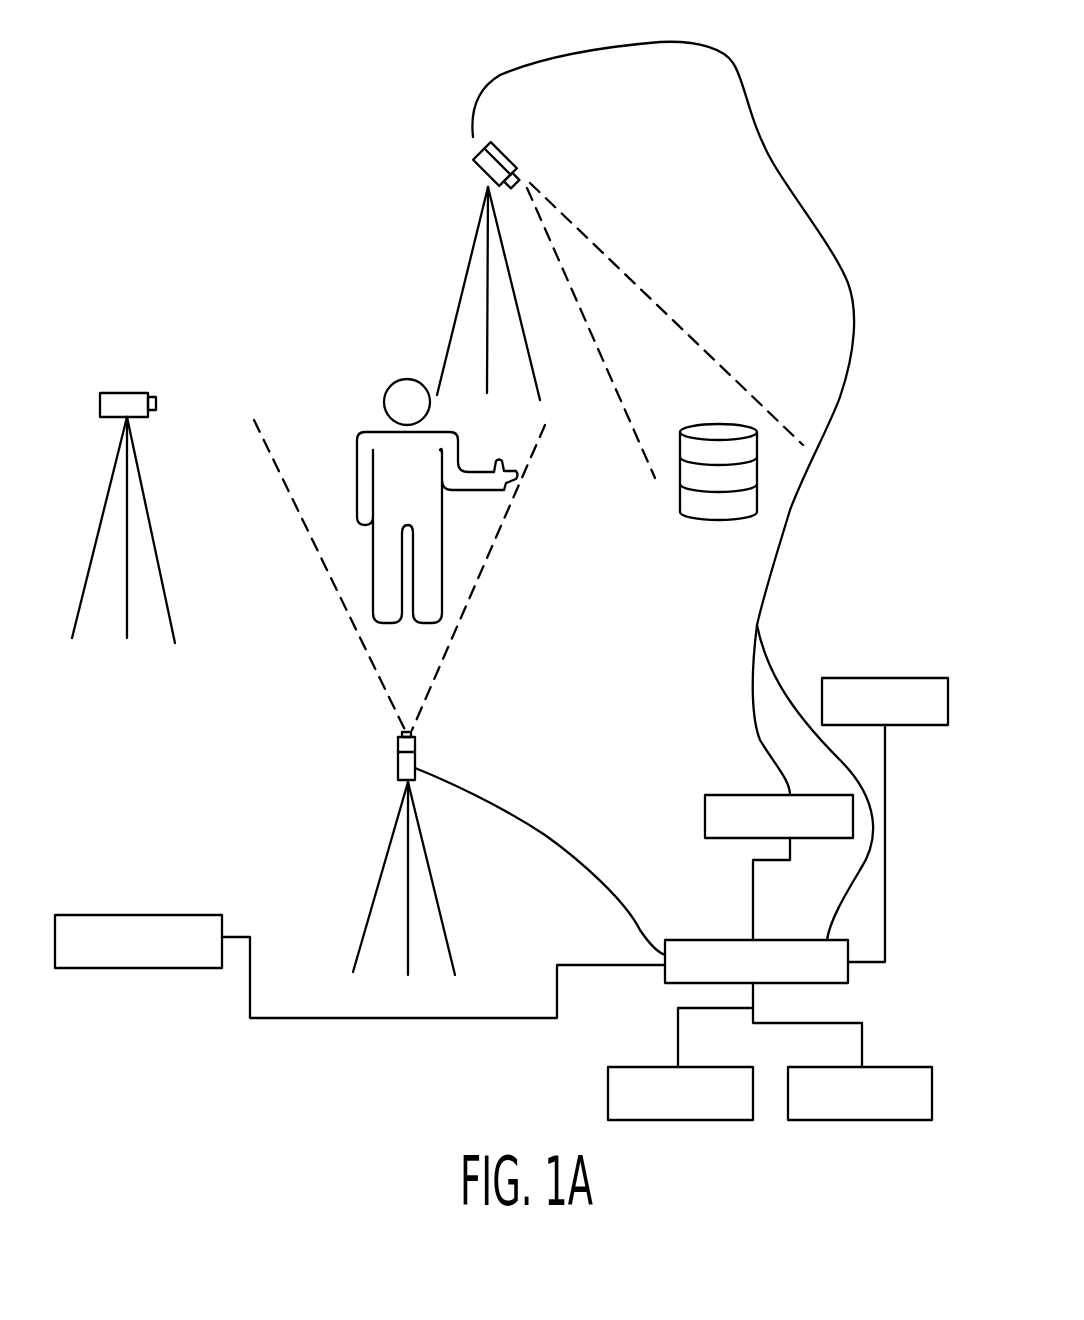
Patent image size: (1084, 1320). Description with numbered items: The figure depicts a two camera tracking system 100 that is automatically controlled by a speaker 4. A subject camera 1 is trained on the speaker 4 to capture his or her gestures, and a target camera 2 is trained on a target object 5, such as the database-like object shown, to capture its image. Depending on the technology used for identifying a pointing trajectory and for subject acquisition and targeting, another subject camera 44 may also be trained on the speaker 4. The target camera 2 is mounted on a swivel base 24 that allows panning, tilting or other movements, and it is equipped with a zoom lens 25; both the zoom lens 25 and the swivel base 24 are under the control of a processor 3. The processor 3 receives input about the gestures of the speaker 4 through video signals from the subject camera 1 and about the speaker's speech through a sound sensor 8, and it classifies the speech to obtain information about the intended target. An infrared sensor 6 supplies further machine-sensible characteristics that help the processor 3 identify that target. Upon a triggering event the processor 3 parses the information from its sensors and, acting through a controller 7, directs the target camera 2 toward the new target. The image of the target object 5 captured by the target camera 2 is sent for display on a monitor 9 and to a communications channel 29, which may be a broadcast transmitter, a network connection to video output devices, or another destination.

The subject camera 1 is at (394, 757).
The target camera 2 is at (507, 150).
The processor 3 is at (820, 975).
The speaker 4 is at (355, 466).
The target object 5 is at (718, 535).
The infrared sensor 6 is at (940, 715).
The controller 7 is at (843, 830).
The sound sensor 8 is at (213, 954).
The monitor 9 is at (730, 1107).
The swivel base 24 is at (483, 181).
The zoom lens 25 is at (528, 178).
The communications channel 29 is at (912, 1107).
The second subject camera 44 is at (125, 393).
The tracking system 100 is at (575, 712).